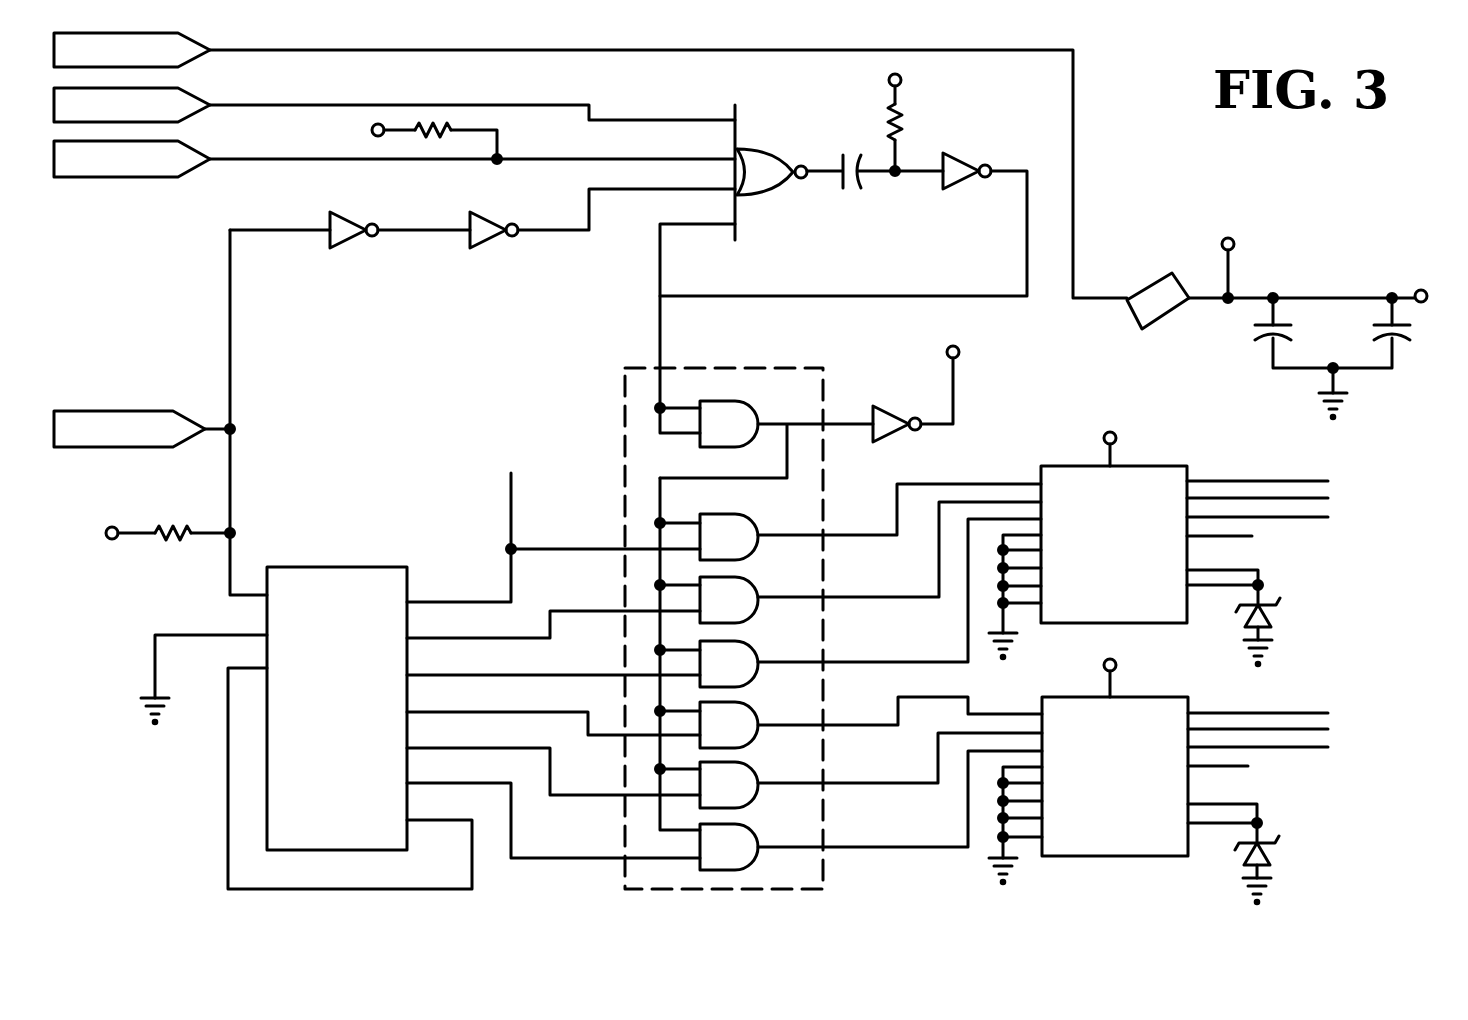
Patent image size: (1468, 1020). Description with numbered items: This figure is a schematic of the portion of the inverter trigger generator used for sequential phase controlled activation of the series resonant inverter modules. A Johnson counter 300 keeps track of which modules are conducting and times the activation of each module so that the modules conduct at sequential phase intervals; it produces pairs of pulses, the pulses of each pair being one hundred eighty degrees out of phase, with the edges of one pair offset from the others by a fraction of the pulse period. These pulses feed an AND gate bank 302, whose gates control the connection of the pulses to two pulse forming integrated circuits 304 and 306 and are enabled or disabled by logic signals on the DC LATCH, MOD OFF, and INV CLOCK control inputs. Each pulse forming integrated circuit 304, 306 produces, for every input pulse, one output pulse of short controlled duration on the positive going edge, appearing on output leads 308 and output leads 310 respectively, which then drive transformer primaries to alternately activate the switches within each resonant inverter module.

The Johnson counter 300 is at (370, 673).
The AND gate bank 302 is at (625, 414).
The pulse forming integrated circuit 304 is at (1148, 537).
The pulse forming integrated circuit 306 is at (1146, 769).
The output leads 308 is at (1397, 480).
The output leads 310 is at (1400, 698).